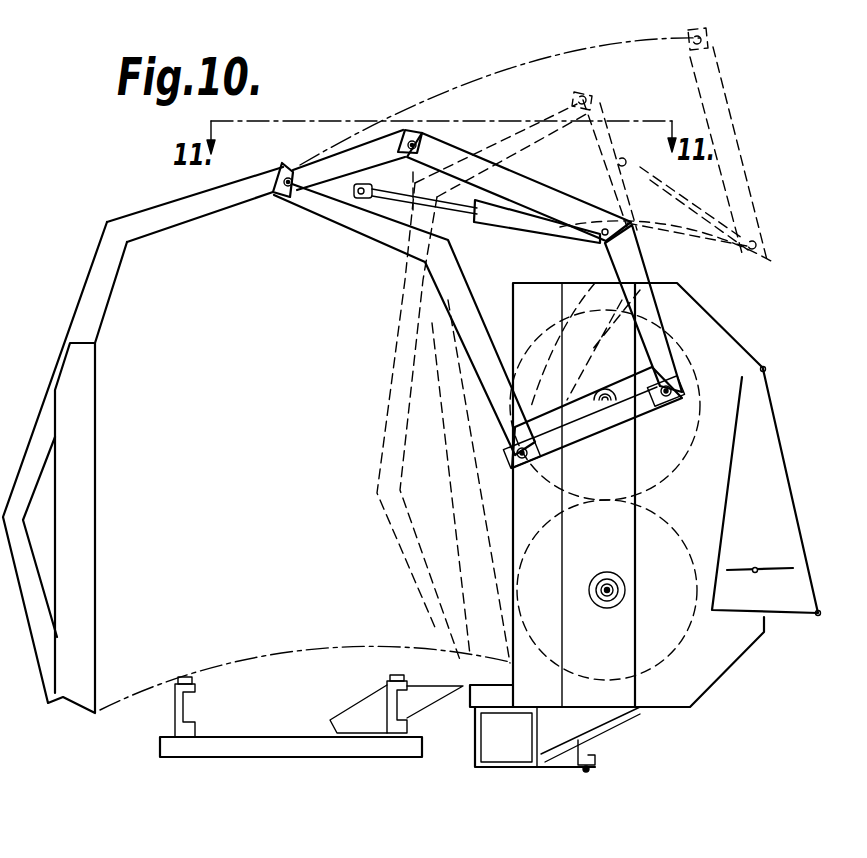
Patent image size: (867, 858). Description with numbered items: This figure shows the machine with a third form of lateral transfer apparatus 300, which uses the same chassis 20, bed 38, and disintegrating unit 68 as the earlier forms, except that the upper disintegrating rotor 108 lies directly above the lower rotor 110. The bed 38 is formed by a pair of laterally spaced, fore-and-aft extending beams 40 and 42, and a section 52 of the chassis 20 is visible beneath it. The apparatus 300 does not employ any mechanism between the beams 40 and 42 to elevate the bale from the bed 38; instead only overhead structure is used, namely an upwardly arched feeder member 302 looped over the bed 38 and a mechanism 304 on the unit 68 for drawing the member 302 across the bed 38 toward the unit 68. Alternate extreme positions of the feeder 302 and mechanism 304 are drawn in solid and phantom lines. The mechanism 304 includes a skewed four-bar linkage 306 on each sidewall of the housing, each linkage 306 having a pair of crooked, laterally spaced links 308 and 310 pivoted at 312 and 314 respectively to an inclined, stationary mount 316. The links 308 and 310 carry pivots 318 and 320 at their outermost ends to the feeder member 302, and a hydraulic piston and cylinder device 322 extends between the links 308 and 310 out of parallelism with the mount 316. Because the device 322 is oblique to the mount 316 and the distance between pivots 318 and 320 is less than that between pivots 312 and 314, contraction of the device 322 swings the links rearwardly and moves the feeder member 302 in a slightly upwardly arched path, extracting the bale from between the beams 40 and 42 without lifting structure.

The lateral transfer apparatus 300 is at (88, 262).
The feeder member 302 is at (95, 322).
The mechanism 304 is at (367, 237).
The skewed four-bar linkage 306 is at (560, 172).
The link 308 is at (592, 279).
The link 310 is at (644, 284).
The pivot 312 is at (528, 465).
The pivot 314 is at (655, 401).
The stationary mount 316 is at (593, 426).
The pivot 318 is at (283, 198).
The pivot 320 is at (406, 142).
The hydraulic piston and cylinder device 322 is at (478, 213).
The disintegrating unit 68 is at (752, 353).
The upper disintegrating rotor 108 is at (614, 405).
The lower rotor 110 is at (626, 590).
The bed 38 is at (172, 710).
The beam 40 is at (387, 688).
The beam 42 is at (197, 690).
The chassis 20 is at (473, 758).
The section 52 is at (566, 765).